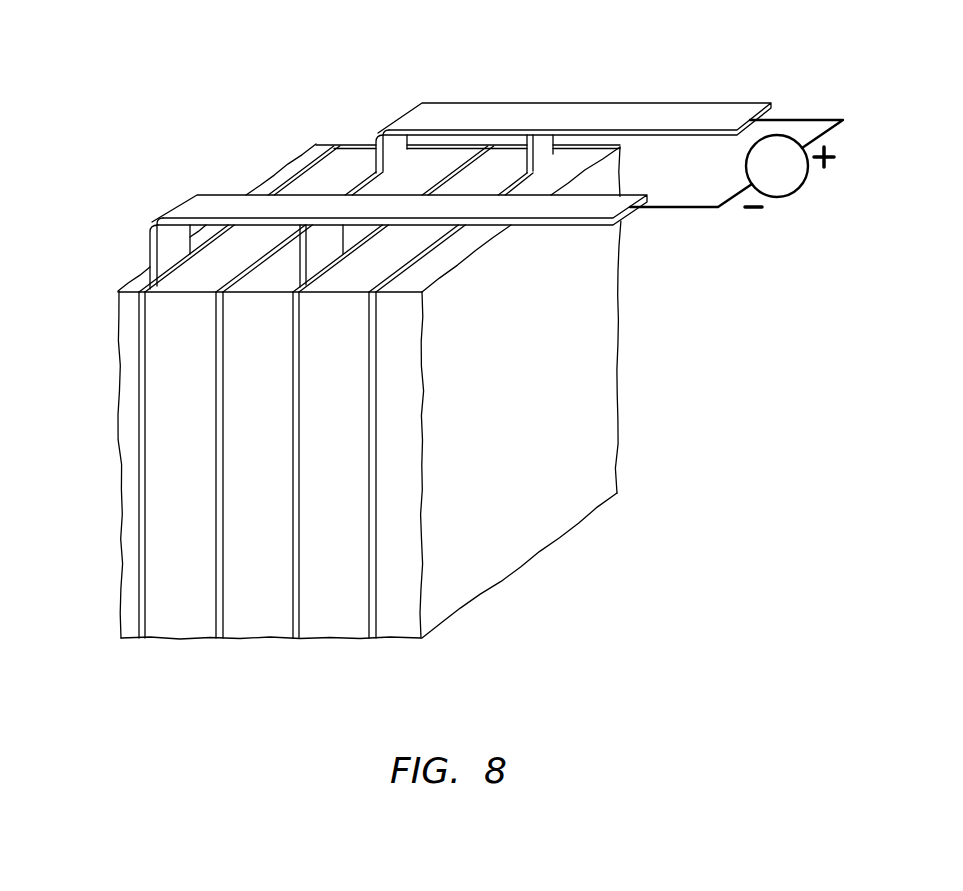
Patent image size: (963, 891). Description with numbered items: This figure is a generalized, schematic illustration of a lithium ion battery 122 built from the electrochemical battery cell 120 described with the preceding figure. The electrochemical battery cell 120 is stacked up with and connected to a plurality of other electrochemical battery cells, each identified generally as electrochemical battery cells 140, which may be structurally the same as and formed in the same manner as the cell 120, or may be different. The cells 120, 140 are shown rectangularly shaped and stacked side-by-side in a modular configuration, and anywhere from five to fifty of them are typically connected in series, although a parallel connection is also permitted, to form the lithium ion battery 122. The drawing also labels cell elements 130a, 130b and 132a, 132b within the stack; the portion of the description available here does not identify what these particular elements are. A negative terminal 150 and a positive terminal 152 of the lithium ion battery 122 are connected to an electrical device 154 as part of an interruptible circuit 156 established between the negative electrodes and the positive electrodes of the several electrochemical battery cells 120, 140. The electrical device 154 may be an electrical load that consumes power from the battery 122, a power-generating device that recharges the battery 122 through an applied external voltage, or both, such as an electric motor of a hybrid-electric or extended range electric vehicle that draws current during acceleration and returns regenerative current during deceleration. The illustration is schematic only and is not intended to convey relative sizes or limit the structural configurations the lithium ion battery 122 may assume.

The lithium ion battery 122 is at (183, 98).
The electrochemical battery cell 120 is at (181, 608).
The first electrode 130a is at (144, 372).
The second electrode 130b is at (215, 470).
The first electrode tab 132a is at (150, 264).
The second electrode tab 132b is at (372, 158).
The electrochemical battery cells 140 is at (398, 620).
The negative terminal 150 is at (226, 208).
The positive terminal 152 is at (633, 118).
The electrical device 154 is at (781, 173).
The interruptible circuit 156 is at (696, 216).